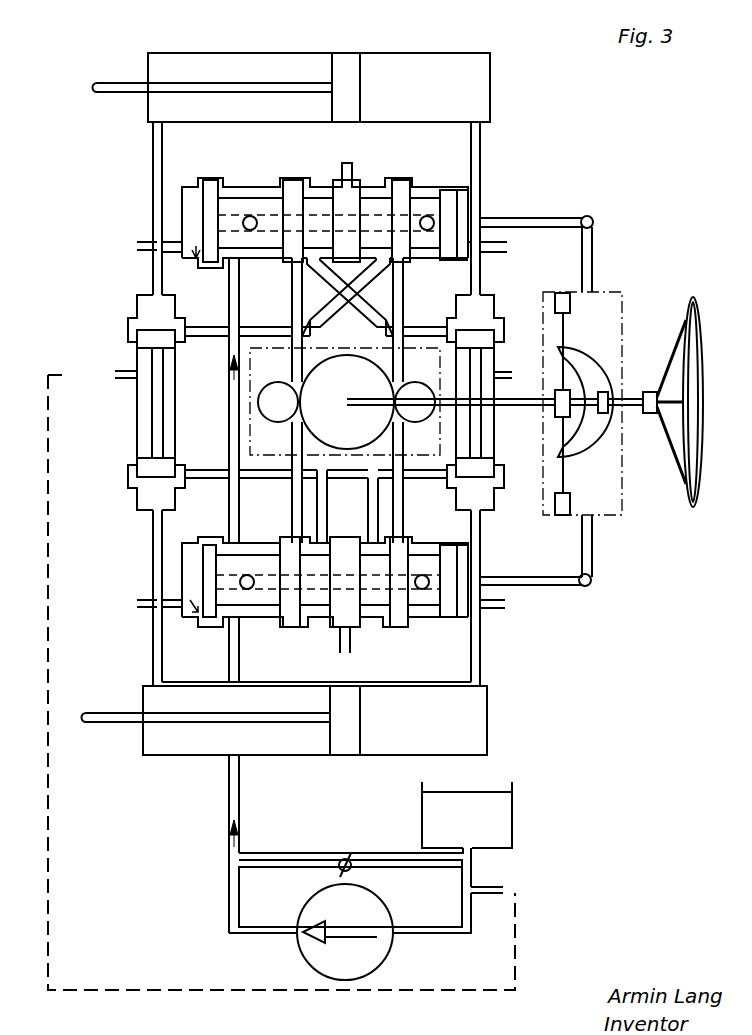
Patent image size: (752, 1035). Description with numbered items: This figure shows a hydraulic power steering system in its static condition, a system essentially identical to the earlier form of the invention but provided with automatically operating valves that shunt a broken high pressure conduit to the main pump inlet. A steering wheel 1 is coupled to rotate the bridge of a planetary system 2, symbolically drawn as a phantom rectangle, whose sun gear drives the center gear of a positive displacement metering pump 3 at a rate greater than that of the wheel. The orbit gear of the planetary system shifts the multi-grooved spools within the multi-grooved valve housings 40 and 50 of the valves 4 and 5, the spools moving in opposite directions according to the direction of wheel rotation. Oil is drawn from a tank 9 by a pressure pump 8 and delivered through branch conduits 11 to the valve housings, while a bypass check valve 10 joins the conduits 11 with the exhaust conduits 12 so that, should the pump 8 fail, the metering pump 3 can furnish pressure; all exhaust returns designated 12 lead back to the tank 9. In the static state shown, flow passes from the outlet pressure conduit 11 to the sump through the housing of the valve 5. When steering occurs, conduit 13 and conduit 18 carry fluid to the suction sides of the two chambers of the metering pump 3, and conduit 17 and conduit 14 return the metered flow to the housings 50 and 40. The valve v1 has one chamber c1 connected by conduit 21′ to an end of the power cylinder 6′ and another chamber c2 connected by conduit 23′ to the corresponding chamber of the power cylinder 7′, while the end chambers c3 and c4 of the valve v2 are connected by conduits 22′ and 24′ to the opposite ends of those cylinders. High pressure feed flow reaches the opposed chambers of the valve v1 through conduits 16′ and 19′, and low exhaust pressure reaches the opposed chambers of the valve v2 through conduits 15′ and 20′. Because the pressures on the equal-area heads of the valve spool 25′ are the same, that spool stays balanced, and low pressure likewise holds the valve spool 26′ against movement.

The steering wheel 1 is at (696, 300).
The planetary system 2 is at (605, 307).
The positive displacement metering pump 3 is at (347, 365).
The valve 4 is at (262, 180).
The valve 5 is at (307, 630).
The power cylinder 6′ is at (530, 87).
The power cylinder 7′ is at (503, 712).
The pressure pump 8 is at (332, 912).
The tank 9 is at (480, 820).
The bypass check valve 10 is at (345, 857).
The branch conduits 11 is at (230, 298).
The exhaust return conduits 12 is at (343, 162).
The conduit 13 is at (290, 297).
The conduit 14 is at (398, 300).
The conduit 15′ is at (368, 318).
The conduit 16′ is at (325, 318).
The conduit 17 is at (297, 520).
The conduit 18 is at (397, 522).
The conduit 19′ is at (322, 518).
The conduit 20′ is at (372, 490).
The conduit 21′ is at (158, 153).
The conduit 22′ is at (477, 155).
The conduit 23′ is at (152, 662).
The conduit 24′ is at (475, 663).
The valve spool 25′ is at (158, 400).
The valve spool 26′ is at (475, 420).
The multi-grooved valve housing 40 is at (428, 207).
The multi-grooved valve housing 50 is at (432, 597).
The chamber c1 is at (145, 300).
The chamber c2 is at (150, 498).
The end chamber c3 is at (477, 313).
The end chamber c4 is at (482, 497).
The automatically operating valve v1 is at (120, 342).
The automatically operating valve v2 is at (500, 360).